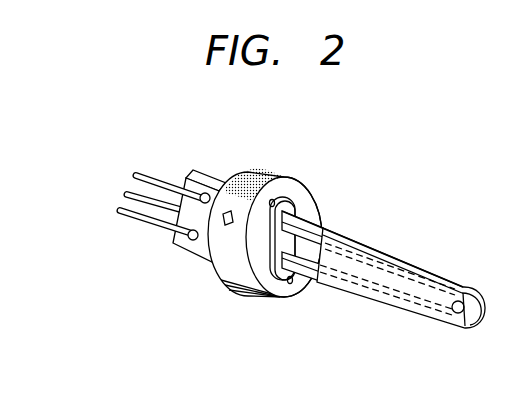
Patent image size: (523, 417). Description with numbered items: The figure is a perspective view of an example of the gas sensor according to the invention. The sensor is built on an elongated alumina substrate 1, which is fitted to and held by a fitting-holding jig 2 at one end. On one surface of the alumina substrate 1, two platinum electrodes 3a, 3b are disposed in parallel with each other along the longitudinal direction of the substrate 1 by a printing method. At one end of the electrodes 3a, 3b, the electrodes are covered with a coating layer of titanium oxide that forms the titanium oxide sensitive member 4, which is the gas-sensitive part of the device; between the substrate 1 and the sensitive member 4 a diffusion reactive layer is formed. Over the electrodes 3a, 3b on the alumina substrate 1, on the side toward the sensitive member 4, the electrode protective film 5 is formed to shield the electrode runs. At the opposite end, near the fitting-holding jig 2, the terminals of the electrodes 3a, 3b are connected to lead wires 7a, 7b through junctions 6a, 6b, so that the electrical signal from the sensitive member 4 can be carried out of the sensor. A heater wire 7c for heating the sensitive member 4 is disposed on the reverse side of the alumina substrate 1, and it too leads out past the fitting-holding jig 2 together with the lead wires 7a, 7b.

The alumina substrate 1 is at (322, 223).
The fitting-holding jig 2 is at (283, 177).
The electrode 3a is at (321, 230).
The electrode 3b is at (312, 278).
The titanium oxide sensitive member 4 is at (463, 326).
The electrode protective film 5 is at (382, 299).
The junction 6a is at (207, 193).
The junction 6b is at (193, 243).
The lead wire 7a is at (147, 175).
The lead wire 7b is at (137, 220).
The heater wire 7c is at (125, 195).